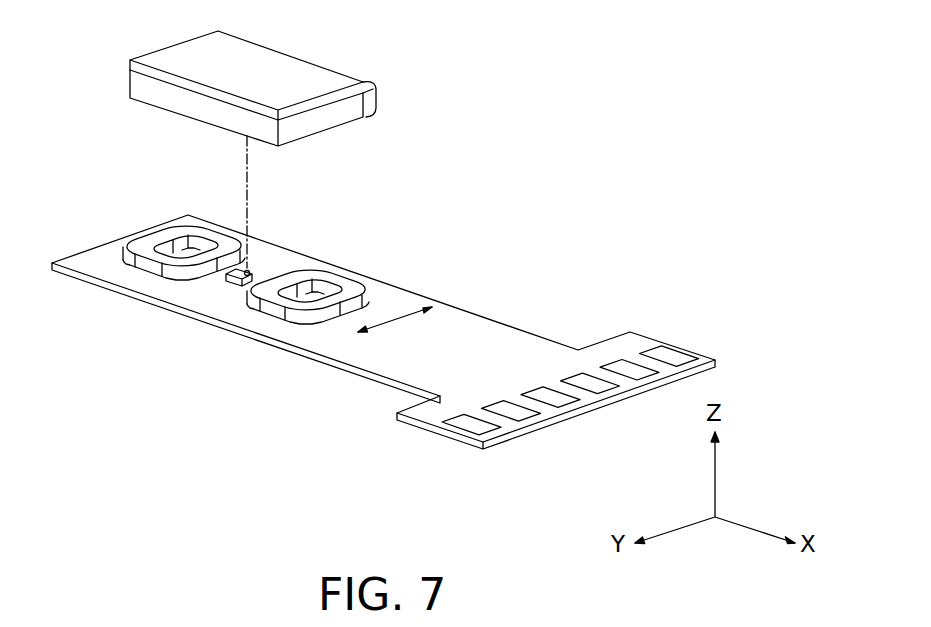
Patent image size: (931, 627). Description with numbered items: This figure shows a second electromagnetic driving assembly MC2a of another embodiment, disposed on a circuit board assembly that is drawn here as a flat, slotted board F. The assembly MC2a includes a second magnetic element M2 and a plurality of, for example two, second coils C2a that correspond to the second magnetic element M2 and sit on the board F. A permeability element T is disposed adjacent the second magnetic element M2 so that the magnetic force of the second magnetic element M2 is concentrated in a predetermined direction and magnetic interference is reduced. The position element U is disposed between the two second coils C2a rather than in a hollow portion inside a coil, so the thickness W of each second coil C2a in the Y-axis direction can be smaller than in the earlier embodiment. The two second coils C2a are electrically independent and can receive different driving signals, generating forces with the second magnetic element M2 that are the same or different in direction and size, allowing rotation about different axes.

The permeability element T is at (277, 62).
The second magnetic element M2 is at (140, 86).
The second coil C2a is at (153, 237).
The position element U is at (232, 284).
The flexible circuit board F is at (633, 342).
The thickness W is at (395, 329).
The second electromagnetic driving assembly MC2a is at (558, 110).